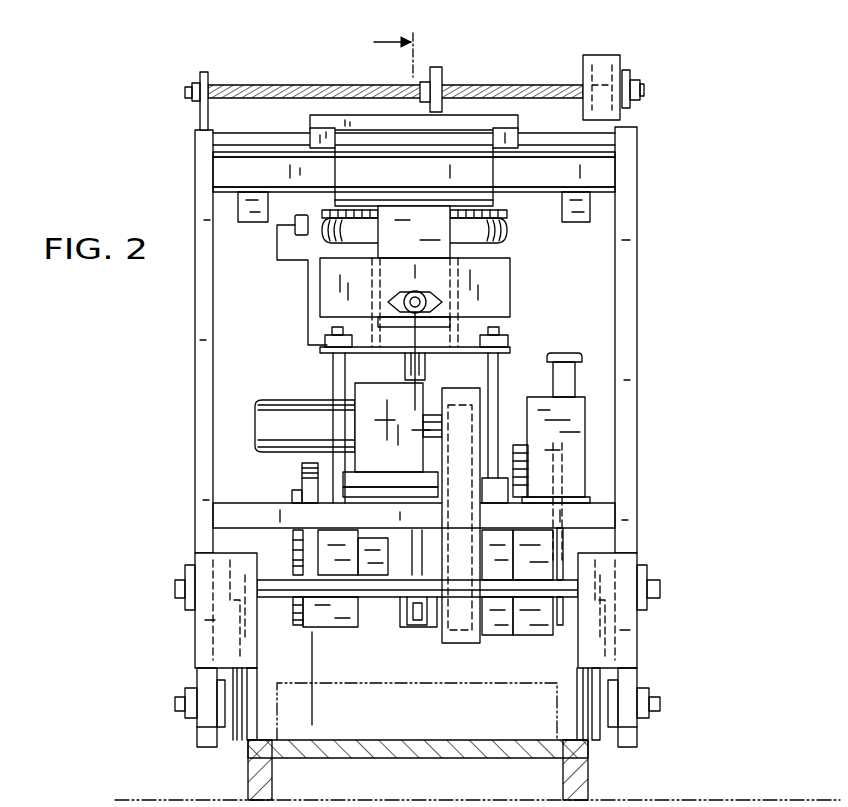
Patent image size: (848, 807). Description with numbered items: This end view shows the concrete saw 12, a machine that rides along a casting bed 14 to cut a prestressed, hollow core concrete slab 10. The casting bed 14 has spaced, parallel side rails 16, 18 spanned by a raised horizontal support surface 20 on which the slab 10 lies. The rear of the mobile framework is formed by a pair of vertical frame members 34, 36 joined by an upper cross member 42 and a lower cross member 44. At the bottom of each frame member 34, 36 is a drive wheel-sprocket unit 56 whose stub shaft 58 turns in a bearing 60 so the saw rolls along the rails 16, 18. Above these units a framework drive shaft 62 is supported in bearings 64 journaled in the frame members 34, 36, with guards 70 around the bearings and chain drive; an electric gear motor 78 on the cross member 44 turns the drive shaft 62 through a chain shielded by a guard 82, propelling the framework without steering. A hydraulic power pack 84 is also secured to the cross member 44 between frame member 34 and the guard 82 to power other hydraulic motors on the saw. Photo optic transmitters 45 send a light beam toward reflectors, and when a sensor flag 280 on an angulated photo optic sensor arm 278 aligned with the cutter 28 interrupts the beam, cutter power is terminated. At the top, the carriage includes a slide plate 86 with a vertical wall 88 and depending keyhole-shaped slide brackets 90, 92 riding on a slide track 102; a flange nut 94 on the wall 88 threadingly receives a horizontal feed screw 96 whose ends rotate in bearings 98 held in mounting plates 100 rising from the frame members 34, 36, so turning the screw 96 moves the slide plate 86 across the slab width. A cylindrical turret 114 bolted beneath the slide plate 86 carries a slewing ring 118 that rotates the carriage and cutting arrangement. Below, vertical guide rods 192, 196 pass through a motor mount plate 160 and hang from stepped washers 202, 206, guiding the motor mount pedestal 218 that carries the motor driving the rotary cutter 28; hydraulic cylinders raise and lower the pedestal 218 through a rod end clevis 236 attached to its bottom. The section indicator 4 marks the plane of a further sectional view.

The section line 4- 4 is at (382, 248).
The concrete slab 10 is at (412, 690).
The concrete saw 12 is at (682, 348).
The casting bed 14 is at (477, 773).
The side rail 16 is at (564, 775).
The side rail 18 is at (271, 785).
The raised horizontal support surface 20 is at (398, 756).
The rotary powered cutter 28 is at (314, 700).
The vertical frame member 34 is at (630, 322).
The vertical frame member 36 is at (203, 396).
The upper cross member 42 is at (598, 176).
The lower cross member 44 is at (608, 505).
The photo optic transmitters 45 is at (246, 212).
The drive wheel-sprocket unit 56 is at (240, 735).
The stub shaft 58 is at (175, 703).
The bearing 60 is at (192, 718).
The framework drive shaft 62 is at (277, 590).
The bearings 64 is at (188, 572).
The guards 70 is at (201, 636).
The electric gear motor 78 is at (257, 432).
The guard 82 is at (462, 645).
The hydraulic power pack 84 is at (568, 383).
The slide plate 86 is at (375, 120).
The vertical wall 88 is at (432, 70).
The slide bracket 90 is at (500, 128).
The slide bracket 92 is at (318, 132).
The flange nut 94 is at (443, 78).
The first horizontal feed screw 96 is at (540, 88).
The bearings 98 is at (190, 85).
The mounting plates 100 is at (206, 72).
The slide track 102 is at (598, 137).
The turret 114 is at (494, 200).
The slewing ring 118 is at (505, 230).
The motor mount plate 160 is at (425, 360).
The guide rod 192 is at (500, 372).
The guide rod 196 is at (333, 375).
The stepped washer 202 is at (503, 340).
The stepped washer 206 is at (327, 338).
The motor mount pedestal 218 is at (368, 617).
The rod end clevis 236 is at (410, 630).
The photo optic sensor arm 278 is at (306, 302).
The sensor flag 280 is at (297, 208).